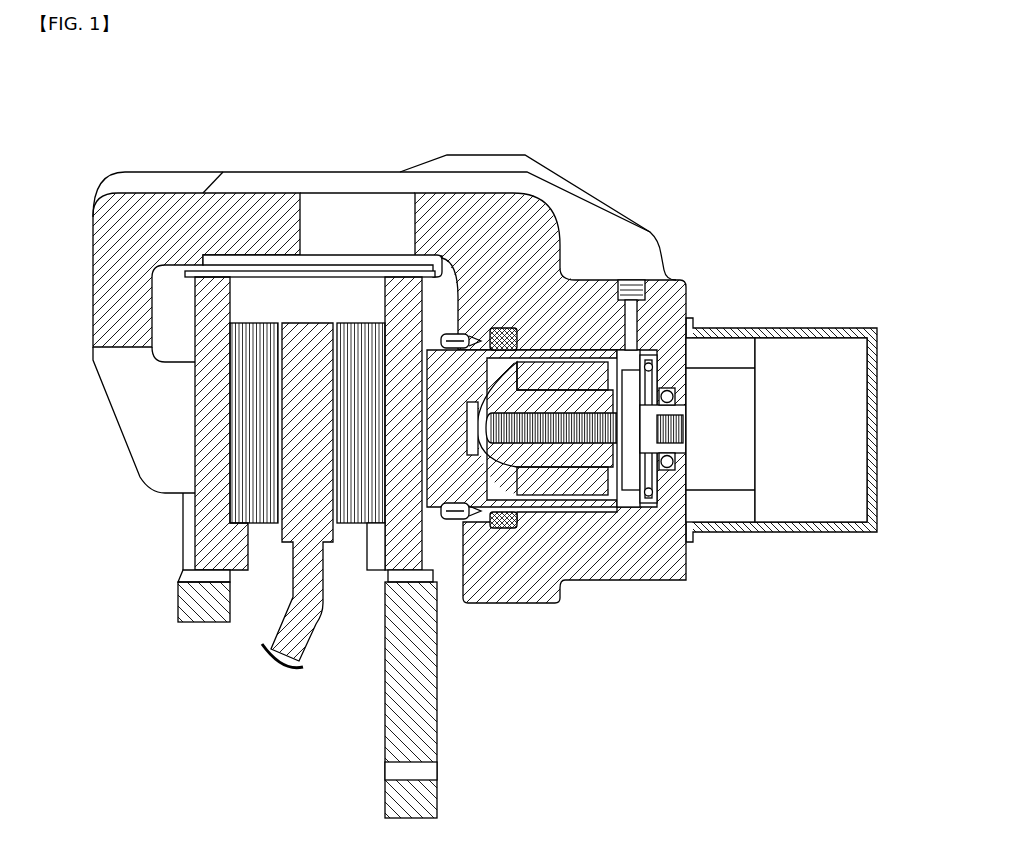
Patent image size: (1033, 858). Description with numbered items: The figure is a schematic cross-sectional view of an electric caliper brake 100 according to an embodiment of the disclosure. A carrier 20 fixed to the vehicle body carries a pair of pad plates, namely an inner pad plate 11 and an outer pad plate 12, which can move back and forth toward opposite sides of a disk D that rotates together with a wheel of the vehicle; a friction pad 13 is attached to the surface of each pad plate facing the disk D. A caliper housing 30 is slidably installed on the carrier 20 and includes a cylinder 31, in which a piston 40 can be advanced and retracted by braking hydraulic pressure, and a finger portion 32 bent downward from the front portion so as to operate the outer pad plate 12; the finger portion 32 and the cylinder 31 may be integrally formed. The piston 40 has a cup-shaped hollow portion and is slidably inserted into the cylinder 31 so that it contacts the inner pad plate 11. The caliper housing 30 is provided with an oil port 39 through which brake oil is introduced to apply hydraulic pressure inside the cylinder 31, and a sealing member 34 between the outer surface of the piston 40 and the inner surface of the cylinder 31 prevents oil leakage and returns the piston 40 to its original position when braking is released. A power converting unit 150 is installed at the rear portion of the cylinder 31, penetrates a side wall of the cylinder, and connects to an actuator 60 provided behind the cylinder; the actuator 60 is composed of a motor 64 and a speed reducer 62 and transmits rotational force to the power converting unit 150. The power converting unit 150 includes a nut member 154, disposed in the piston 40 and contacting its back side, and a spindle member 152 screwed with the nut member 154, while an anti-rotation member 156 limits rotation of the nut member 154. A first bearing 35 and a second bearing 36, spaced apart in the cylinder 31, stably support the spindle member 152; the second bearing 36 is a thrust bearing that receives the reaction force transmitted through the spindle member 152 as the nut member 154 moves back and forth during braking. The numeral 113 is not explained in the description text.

The electric caliper brake 100 is at (669, 192).
The caliper housing 30 is at (510, 186).
The cylinder 31 is at (638, 568).
The finger portion 32 is at (126, 398).
The sealing member 34 is at (494, 530).
The first bearing 35 is at (688, 360).
The second bearing 36 is at (669, 392).
The oil port 39 is at (642, 313).
The piston 40 is at (562, 352).
The actuator 60 is at (781, 477).
The speed reducer 62 is at (735, 475).
The motor 64 is at (834, 475).
The inner pad plate 11 is at (385, 572).
The outer pad plate 12 is at (213, 546).
The friction pad 13 is at (348, 510).
The coil winding 113 is at (248, 507).
The power converting unit 150 is at (553, 420).
The spindle member 152 is at (583, 508).
The nut member 154 is at (540, 486).
The anti-rotation member 156 is at (581, 368).
The carrier 20 is at (393, 722).
The disk D is at (304, 632).